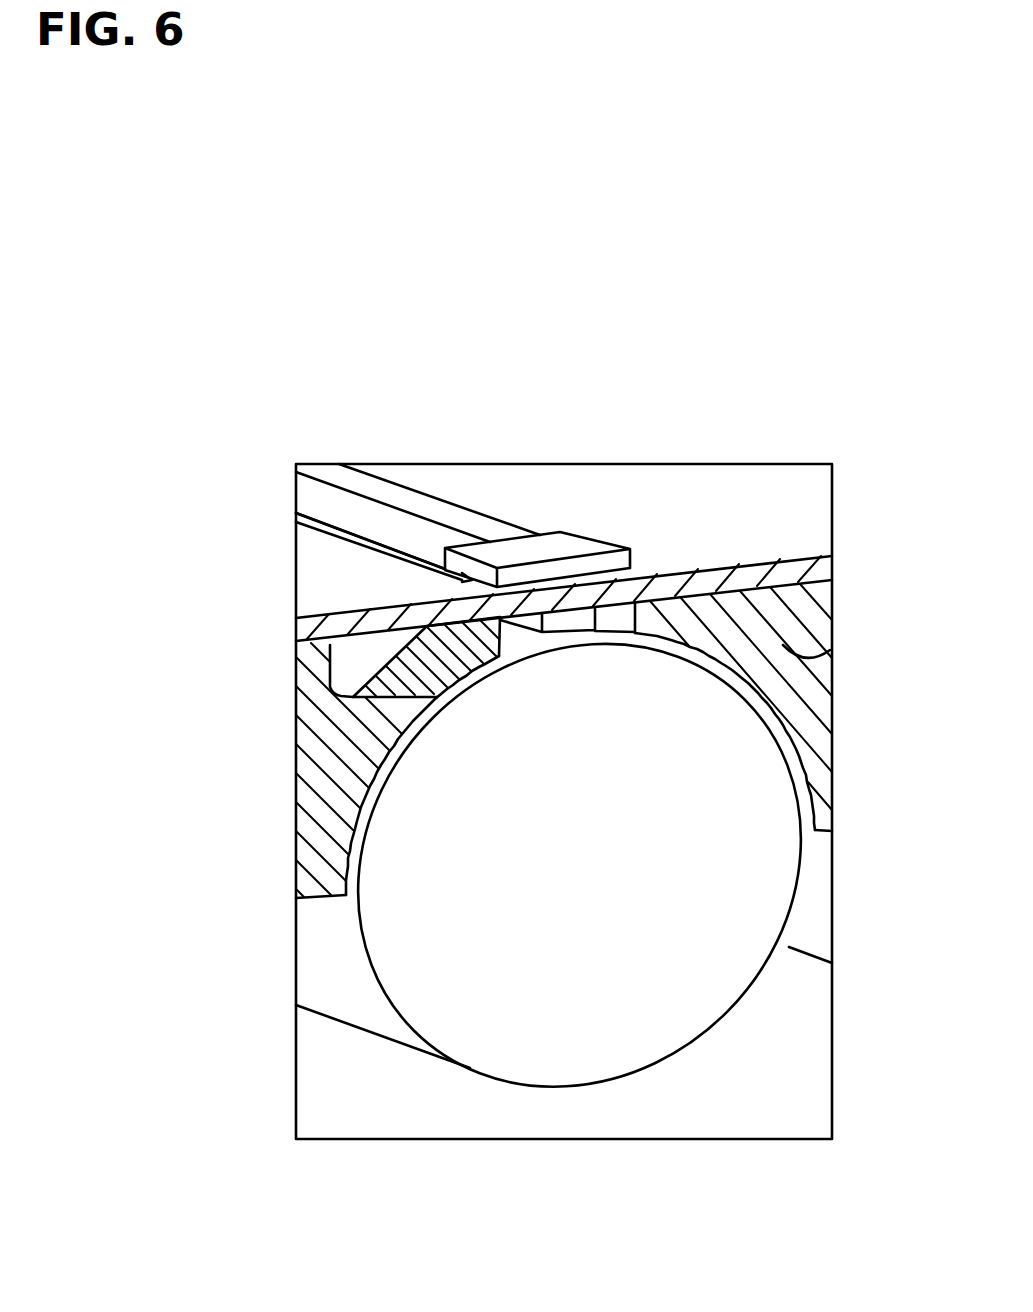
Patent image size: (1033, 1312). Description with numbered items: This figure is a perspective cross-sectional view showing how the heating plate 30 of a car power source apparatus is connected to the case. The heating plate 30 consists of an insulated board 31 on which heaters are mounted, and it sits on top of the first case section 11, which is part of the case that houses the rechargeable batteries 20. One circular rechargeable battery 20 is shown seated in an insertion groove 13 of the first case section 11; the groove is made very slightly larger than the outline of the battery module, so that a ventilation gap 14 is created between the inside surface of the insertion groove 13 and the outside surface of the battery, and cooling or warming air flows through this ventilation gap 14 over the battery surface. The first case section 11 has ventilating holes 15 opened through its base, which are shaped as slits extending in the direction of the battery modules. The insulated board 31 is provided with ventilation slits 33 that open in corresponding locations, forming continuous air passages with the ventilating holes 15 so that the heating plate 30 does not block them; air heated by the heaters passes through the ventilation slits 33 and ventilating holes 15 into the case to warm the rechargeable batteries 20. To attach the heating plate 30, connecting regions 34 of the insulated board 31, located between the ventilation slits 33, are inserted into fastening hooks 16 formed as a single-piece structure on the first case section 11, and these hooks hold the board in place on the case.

The first case section 11 is at (310, 763).
The insertion grooves 13 is at (380, 731).
The ventilation gaps 14 is at (361, 826).
The ventilating holes 15 is at (425, 515).
The fastening hooks 16 is at (575, 550).
The rechargeable batteries 20 is at (483, 1050).
The heating plate 30 is at (506, 535).
The insulated board 31 is at (783, 512).
The ventilation slits 33 is at (487, 501).
The connecting regions 34 is at (567, 598).